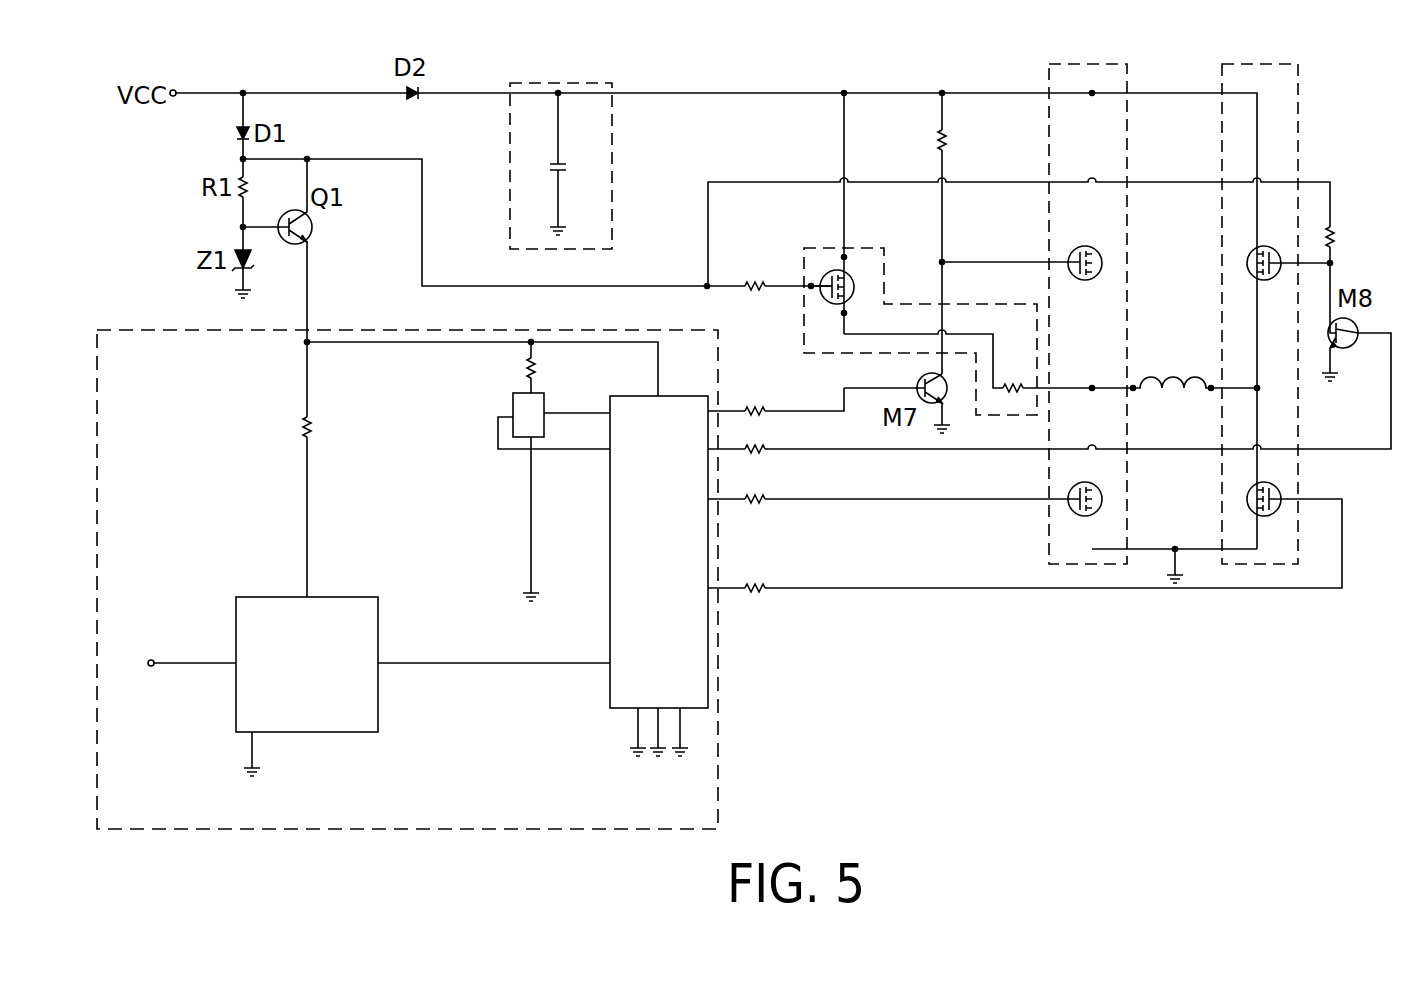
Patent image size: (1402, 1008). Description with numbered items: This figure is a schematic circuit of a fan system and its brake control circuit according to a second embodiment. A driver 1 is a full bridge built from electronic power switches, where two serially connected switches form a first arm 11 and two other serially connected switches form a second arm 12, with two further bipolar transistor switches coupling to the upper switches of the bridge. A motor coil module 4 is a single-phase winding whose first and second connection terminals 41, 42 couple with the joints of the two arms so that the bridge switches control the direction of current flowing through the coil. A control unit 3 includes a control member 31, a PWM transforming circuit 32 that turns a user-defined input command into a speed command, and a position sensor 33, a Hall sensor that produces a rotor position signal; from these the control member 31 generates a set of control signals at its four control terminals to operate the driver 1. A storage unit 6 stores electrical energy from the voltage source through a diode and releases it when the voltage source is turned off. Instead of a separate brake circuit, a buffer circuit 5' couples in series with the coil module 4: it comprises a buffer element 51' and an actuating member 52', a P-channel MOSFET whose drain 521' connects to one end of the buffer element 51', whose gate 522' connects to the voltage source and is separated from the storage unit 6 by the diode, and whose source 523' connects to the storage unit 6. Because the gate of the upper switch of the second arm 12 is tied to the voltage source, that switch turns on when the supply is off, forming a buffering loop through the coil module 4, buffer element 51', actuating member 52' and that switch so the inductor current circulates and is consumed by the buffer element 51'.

The driver 1 is at (1165, 708).
The first arm 11 is at (1087, 565).
The second arm 12 is at (1233, 565).
The control unit 3 is at (443, 830).
The control member 31 is at (690, 710).
The PWM transforming circuit 32 is at (282, 597).
The position sensor 33 is at (538, 393).
The coil module 4 is at (1178, 385).
The first connection terminal 41 is at (1134, 386).
The second connection terminal 42 is at (1211, 386).
The storage unit 6 is at (617, 128).
The buffer circuit 5' is at (878, 306).
The buffer element 51' is at (992, 478).
The actuating member 52' is at (828, 210).
The drain 521' is at (788, 346).
The gate 522' is at (775, 250).
The source 523' is at (794, 192).